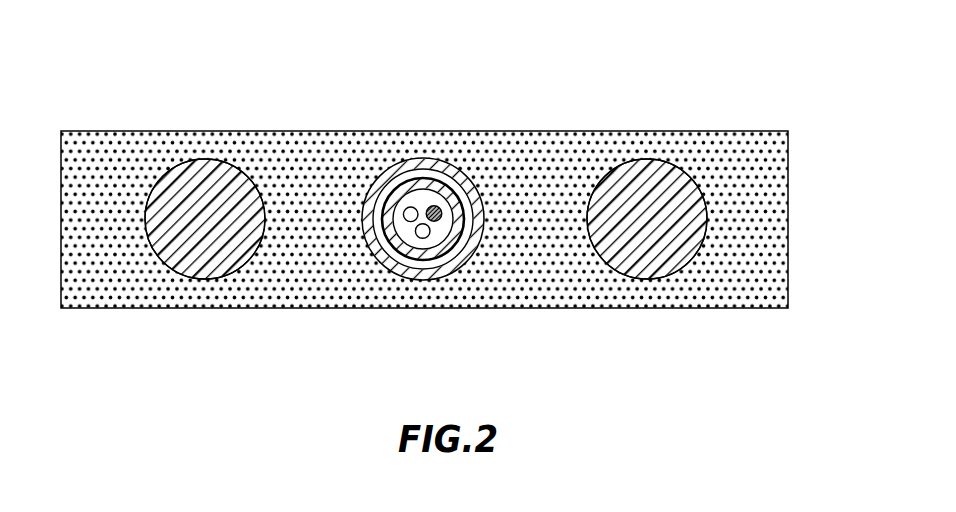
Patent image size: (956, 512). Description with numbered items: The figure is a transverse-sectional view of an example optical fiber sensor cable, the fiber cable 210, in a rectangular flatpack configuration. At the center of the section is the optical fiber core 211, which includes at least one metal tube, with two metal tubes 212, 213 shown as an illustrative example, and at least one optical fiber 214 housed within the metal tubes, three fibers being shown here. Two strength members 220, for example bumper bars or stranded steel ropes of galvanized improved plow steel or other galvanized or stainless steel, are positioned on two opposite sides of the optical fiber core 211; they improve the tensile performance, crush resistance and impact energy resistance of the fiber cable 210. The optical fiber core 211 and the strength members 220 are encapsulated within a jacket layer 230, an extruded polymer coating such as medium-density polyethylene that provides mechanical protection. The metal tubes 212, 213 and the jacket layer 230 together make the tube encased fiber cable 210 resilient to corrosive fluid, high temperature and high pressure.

The fiber cable 210 is at (615, 59).
The optical fiber core 211 is at (443, 220).
The metal tube 212 is at (456, 262).
The metal tube 213 is at (445, 254).
The optical fiber 214 is at (437, 206).
The strength member 220 is at (220, 139).
The jacket layer 230 is at (334, 153).